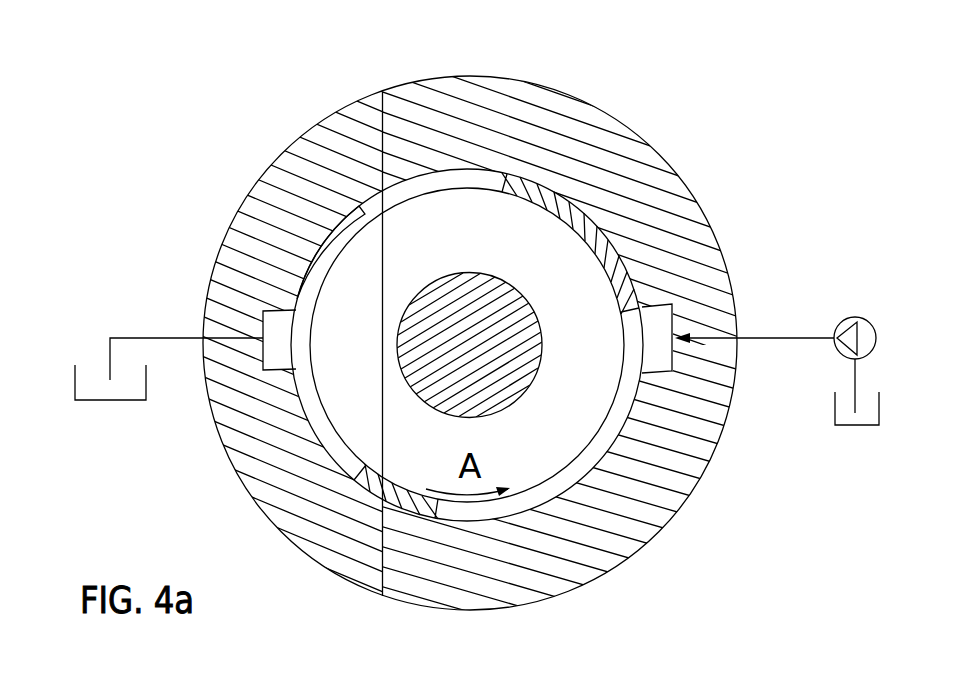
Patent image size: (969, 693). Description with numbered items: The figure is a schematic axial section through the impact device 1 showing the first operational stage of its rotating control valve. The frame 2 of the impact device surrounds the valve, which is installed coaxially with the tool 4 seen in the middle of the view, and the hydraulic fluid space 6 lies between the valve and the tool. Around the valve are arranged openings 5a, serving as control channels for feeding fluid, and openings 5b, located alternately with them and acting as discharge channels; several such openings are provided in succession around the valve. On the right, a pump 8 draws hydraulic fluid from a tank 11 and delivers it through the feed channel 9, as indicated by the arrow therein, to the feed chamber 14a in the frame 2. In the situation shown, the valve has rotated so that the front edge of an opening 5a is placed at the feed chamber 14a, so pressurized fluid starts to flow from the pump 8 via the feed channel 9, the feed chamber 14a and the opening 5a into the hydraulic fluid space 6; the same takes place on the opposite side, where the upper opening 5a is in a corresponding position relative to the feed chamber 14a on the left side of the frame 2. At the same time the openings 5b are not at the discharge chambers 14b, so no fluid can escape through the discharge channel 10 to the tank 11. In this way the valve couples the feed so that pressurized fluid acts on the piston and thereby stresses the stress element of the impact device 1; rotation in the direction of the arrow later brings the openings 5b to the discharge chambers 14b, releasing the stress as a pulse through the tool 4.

The impact device 1 is at (678, 550).
The frame 2 is at (255, 182).
The tool 4 is at (490, 273).
The opening 5a is at (450, 172).
The opening 5b is at (332, 440).
The first hydraulic fluid space 6 is at (410, 260).
The pump 8 is at (854, 318).
The hydraulic fluid feed channel 9 is at (757, 343).
The hydraulic fluid discharge channel 10 is at (152, 337).
The hydraulic fluid tank 11 is at (118, 402).
The feed chamber 14a is at (663, 325).
The discharge chamber 14b is at (273, 318).